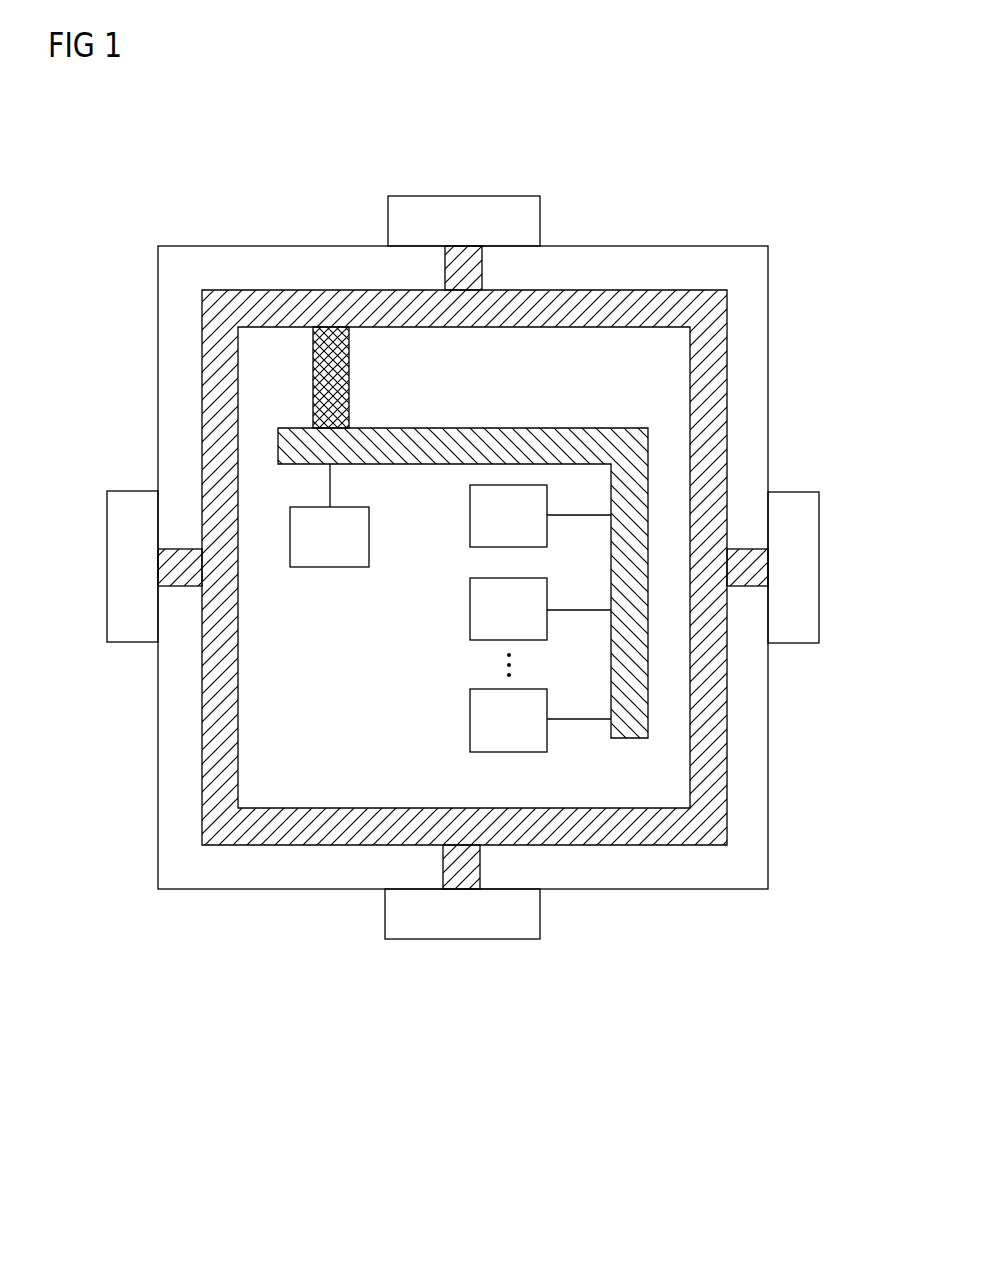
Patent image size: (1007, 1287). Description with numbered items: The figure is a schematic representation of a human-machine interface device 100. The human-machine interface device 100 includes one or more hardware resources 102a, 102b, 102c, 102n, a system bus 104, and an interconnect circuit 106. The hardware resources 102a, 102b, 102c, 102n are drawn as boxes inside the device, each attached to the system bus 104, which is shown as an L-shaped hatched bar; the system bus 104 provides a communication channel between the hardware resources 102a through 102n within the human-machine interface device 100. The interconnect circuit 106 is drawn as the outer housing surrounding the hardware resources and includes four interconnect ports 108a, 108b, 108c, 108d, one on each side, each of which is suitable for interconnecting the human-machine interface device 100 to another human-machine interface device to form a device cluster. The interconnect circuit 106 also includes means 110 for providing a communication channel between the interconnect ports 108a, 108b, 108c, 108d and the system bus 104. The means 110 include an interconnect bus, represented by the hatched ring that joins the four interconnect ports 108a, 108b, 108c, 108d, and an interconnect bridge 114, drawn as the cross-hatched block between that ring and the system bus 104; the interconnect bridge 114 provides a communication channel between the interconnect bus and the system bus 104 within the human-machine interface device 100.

The human-machine interface device 100 is at (177, 1074).
The hardware resource 102a is at (329, 515).
The hardware resource 102b is at (540, 516).
The hardware resource 102c is at (540, 609).
The hardware resource 102n is at (540, 720).
The system bus 104 is at (576, 428).
The interconnect circuit 106 is at (558, 231).
The interconnect port 108a is at (465, 196).
The interconnect port 108b is at (815, 491).
The interconnect port 108c is at (460, 943).
The interconnect port 108d is at (112, 491).
The means for providing a communication channel 110 is at (432, 383).
The interconnect bridge 114 is at (351, 357).